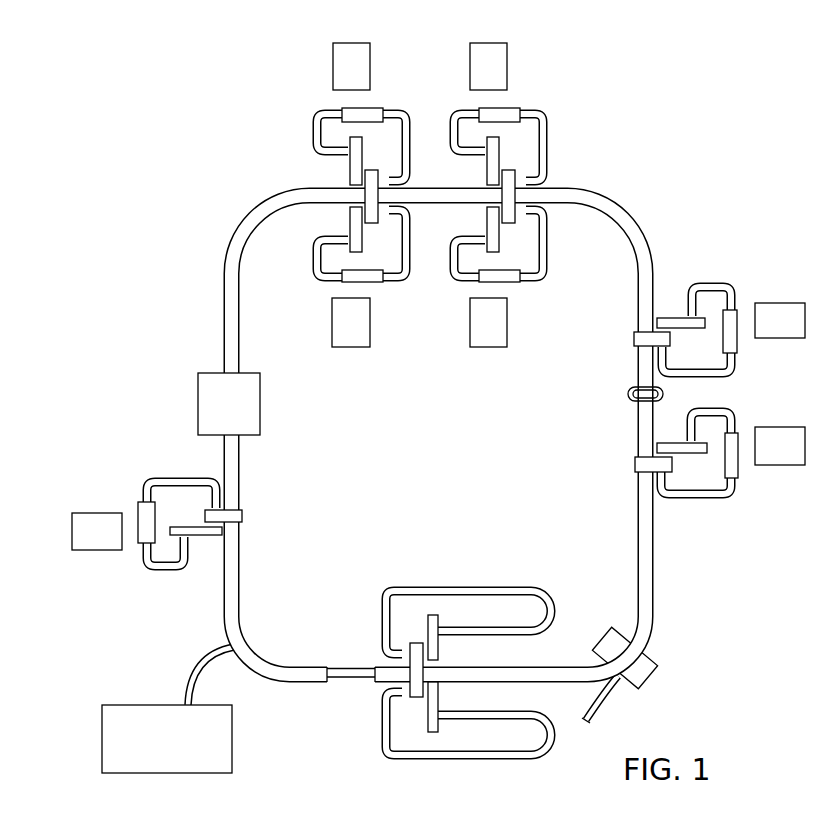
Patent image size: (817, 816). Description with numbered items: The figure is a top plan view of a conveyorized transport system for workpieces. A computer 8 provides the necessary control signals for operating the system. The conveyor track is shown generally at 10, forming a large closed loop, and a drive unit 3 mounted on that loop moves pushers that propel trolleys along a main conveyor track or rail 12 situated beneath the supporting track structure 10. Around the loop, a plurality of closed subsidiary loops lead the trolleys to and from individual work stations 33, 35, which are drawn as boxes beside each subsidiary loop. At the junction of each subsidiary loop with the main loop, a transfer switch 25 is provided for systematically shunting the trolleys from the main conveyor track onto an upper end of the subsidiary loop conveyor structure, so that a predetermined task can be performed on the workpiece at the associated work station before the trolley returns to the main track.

The drive unit 3 is at (260, 428).
The computer 8 is at (232, 735).
The conveyor track 10 is at (240, 474).
The main conveyor track 12 is at (353, 679).
The transfer switch 25 is at (372, 223).
The work station 33 is at (97, 550).
The work station 35 is at (370, 70).